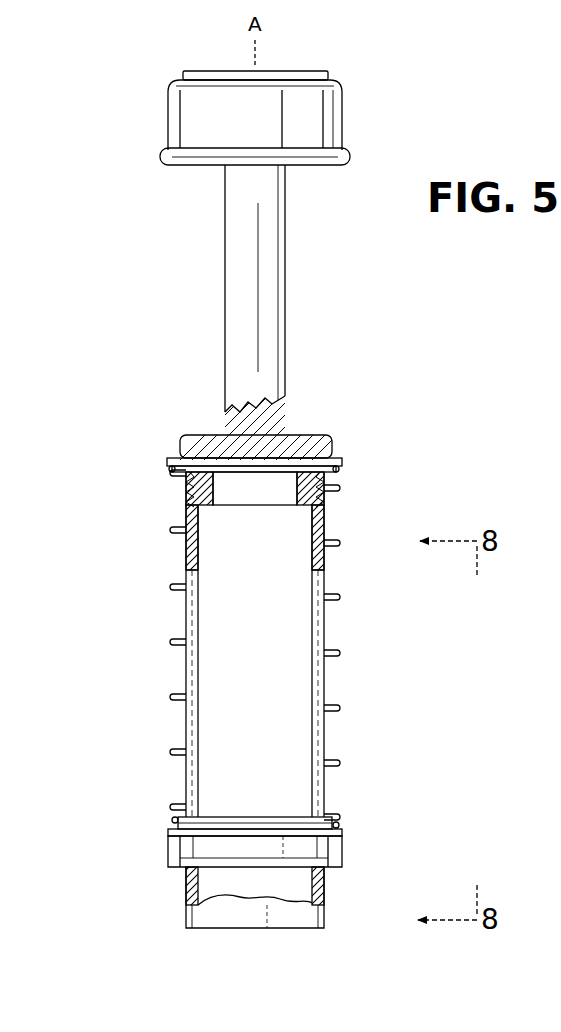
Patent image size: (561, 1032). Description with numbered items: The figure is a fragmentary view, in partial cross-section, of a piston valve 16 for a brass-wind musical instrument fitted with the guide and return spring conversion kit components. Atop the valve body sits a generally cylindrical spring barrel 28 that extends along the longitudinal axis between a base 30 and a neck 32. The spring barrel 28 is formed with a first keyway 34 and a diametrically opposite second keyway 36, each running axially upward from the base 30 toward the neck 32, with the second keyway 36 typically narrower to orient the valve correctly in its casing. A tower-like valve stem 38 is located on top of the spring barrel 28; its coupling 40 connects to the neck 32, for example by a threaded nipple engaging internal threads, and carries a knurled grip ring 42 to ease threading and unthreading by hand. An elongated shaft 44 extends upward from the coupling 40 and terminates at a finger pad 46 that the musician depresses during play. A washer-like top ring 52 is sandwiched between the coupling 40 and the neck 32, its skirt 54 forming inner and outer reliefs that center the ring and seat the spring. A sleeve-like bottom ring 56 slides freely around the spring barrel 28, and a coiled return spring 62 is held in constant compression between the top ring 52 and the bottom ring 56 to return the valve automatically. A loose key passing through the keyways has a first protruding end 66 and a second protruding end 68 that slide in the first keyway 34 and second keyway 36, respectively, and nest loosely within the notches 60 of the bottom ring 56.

The piston valve 16 is at (416, 325).
The spring barrel 28 is at (183, 548).
The base 30 is at (186, 915).
The neck 32 is at (185, 487).
The first keyway 34 is at (195, 625).
The second keyway 36 is at (314, 730).
The valve stem 38 is at (223, 330).
The coupling 40 is at (297, 506).
The grip ring 42 is at (331, 440).
The elongated shaft 44 is at (285, 250).
The finger pad 46 is at (330, 120).
The top ring 52 is at (346, 452).
The skirt 54 is at (248, 472).
The bottom ring 56 is at (166, 824).
The notches 60 is at (168, 838).
The return spring 62 is at (346, 653).
The first protruding end 66 is at (170, 858).
The second protruding end 68 is at (342, 858).